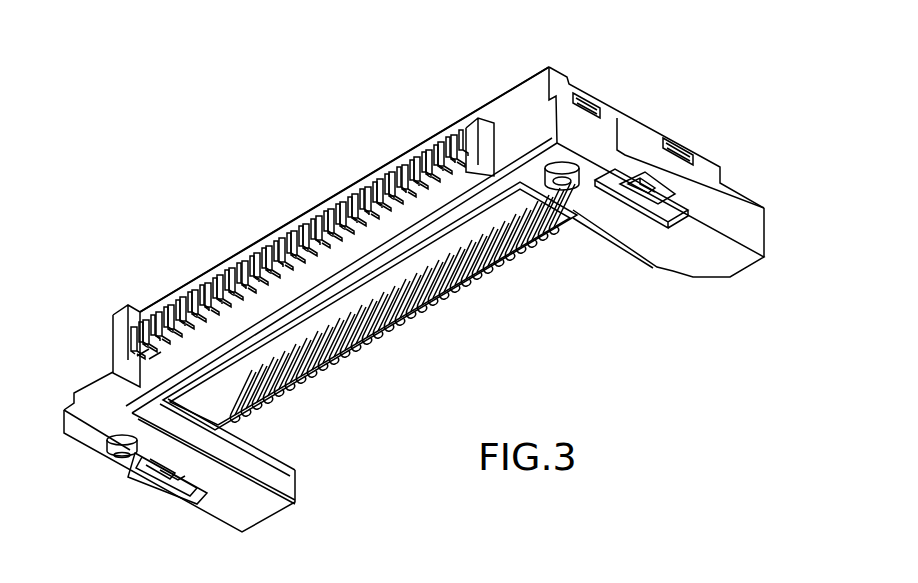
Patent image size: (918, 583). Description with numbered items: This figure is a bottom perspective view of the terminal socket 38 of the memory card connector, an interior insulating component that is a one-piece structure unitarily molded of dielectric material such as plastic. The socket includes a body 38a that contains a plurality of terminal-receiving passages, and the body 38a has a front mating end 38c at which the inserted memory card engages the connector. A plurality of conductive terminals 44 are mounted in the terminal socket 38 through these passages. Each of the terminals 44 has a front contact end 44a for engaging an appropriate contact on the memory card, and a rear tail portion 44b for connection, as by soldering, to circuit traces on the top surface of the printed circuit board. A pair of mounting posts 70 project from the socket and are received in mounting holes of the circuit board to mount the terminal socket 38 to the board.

The terminal socket 38 is at (648, 110).
The body 38a is at (477, 286).
The front mating end 38c is at (393, 168).
The conductive terminals 44 is at (287, 230).
The front contact ends 44a is at (364, 332).
The rear tail portions 44b is at (207, 284).
The mounting posts 70 is at (570, 187).